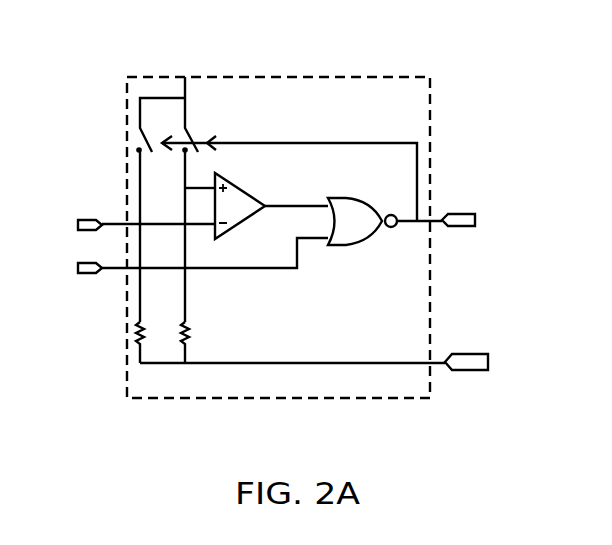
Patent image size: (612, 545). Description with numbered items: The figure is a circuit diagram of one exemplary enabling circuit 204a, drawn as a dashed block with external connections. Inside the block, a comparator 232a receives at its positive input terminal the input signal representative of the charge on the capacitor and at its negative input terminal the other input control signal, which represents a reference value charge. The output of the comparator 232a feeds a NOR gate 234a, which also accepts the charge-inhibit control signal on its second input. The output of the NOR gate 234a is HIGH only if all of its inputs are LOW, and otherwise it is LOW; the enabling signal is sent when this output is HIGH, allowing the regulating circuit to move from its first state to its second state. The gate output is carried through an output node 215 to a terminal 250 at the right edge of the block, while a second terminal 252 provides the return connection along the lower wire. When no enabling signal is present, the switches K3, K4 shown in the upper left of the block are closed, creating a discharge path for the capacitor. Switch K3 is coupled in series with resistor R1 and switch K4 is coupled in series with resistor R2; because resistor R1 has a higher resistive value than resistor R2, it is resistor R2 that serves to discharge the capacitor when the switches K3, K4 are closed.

The enabling circuit 204a is at (430, 106).
The comparator 232a is at (243, 178).
The NOR gate 234a is at (341, 197).
The output signal node 215 is at (416, 224).
The output terminal 250 is at (465, 213).
The ground/reference terminal 252 is at (477, 370).
The switch K3 is at (194, 199).
The switch K4 is at (160, 210).
The resistor R1 is at (196, 342).
The resistor R2 is at (151, 342).